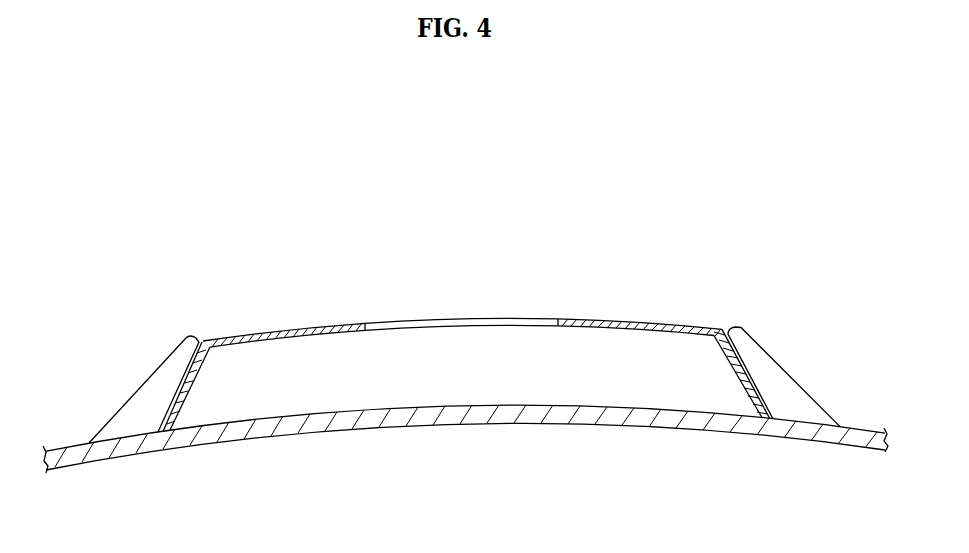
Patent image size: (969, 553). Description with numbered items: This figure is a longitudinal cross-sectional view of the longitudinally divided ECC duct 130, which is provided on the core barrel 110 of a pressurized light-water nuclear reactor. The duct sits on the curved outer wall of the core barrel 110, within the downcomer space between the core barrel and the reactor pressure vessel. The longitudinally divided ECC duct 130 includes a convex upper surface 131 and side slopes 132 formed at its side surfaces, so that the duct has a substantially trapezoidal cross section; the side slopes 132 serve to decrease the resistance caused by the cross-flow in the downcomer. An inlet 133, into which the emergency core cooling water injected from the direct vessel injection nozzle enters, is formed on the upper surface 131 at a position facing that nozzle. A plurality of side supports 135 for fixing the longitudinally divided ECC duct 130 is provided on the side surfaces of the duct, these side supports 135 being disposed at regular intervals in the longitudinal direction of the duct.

The core barrel 110 is at (678, 416).
The longitudinally divided ECC duct 130 is at (497, 104).
The upper surface 131 is at (670, 323).
The side slopes 132 is at (753, 378).
The inlet 133 is at (460, 323).
The side supports 135 is at (802, 388).